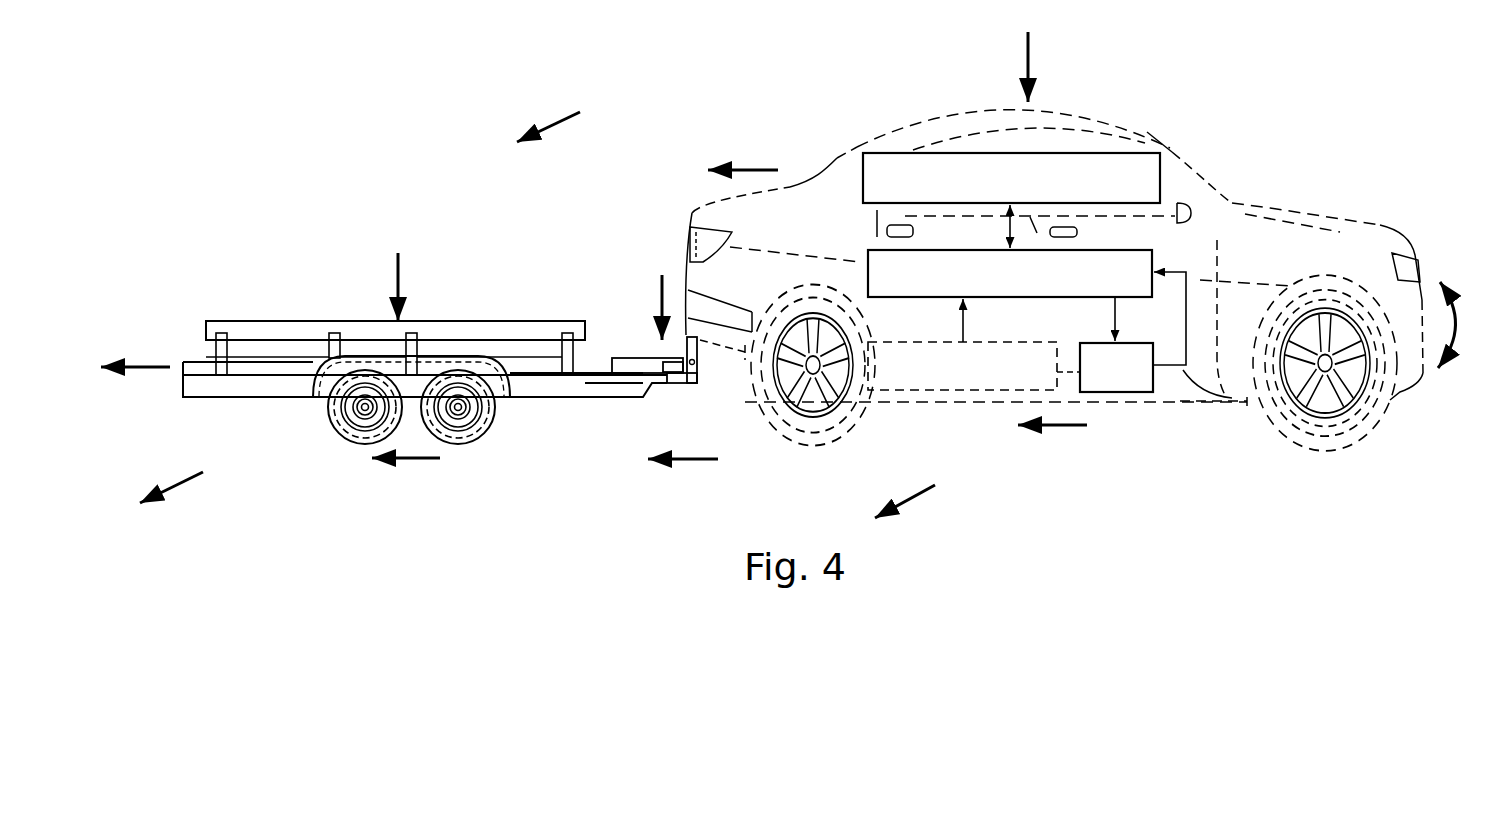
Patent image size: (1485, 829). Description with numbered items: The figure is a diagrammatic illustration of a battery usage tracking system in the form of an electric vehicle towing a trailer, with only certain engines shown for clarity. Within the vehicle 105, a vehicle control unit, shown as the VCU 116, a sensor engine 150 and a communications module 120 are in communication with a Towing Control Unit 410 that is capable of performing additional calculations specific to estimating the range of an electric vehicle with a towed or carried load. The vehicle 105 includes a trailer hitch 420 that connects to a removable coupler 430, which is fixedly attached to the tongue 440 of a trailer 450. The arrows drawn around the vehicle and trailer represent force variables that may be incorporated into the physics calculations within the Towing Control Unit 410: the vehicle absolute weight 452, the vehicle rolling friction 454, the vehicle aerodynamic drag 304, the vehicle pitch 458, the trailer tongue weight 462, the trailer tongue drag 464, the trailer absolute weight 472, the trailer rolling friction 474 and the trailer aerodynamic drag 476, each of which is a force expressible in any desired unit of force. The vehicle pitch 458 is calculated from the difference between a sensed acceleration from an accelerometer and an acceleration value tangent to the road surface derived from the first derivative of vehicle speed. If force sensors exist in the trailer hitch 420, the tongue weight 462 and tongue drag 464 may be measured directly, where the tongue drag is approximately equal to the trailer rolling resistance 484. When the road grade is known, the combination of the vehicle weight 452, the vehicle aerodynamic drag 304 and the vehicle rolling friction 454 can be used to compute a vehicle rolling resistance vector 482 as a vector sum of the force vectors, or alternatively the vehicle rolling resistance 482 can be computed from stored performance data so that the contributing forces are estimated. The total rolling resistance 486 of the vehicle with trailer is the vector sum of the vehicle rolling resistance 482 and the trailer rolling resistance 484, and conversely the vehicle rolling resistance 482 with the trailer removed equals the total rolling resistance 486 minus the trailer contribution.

The vehicle 105 is at (1172, 143).
The vehicle control unit (VCU) 116 is at (1128, 393).
The communications module 120 is at (893, 153).
The sensor engine 150 is at (947, 394).
The vehicle aerodynamic drag 304 is at (750, 166).
The Towing Control Unit 410 is at (1153, 257).
The trailer hitch 420 is at (683, 383).
The removable coupler 430 is at (640, 358).
The tongue 440 is at (570, 397).
The trailer 450 is at (290, 321).
The vehicle absolute weight 452 is at (1032, 62).
The vehicle rolling friction 454 is at (1058, 432).
The vehicle pitch 458 is at (1452, 272).
The trailer tongue weight 462 is at (655, 298).
The trailer tongue drag 464 is at (693, 465).
The trailer absolute weight 472 is at (391, 276).
The trailer rolling friction 474 is at (415, 465).
The trailer aerodynamic drag 476 is at (142, 372).
The vehicle rolling resistance vector 482 is at (912, 505).
The trailer rolling resistance 484 is at (180, 490).
The total rolling resistance 486 is at (551, 123).